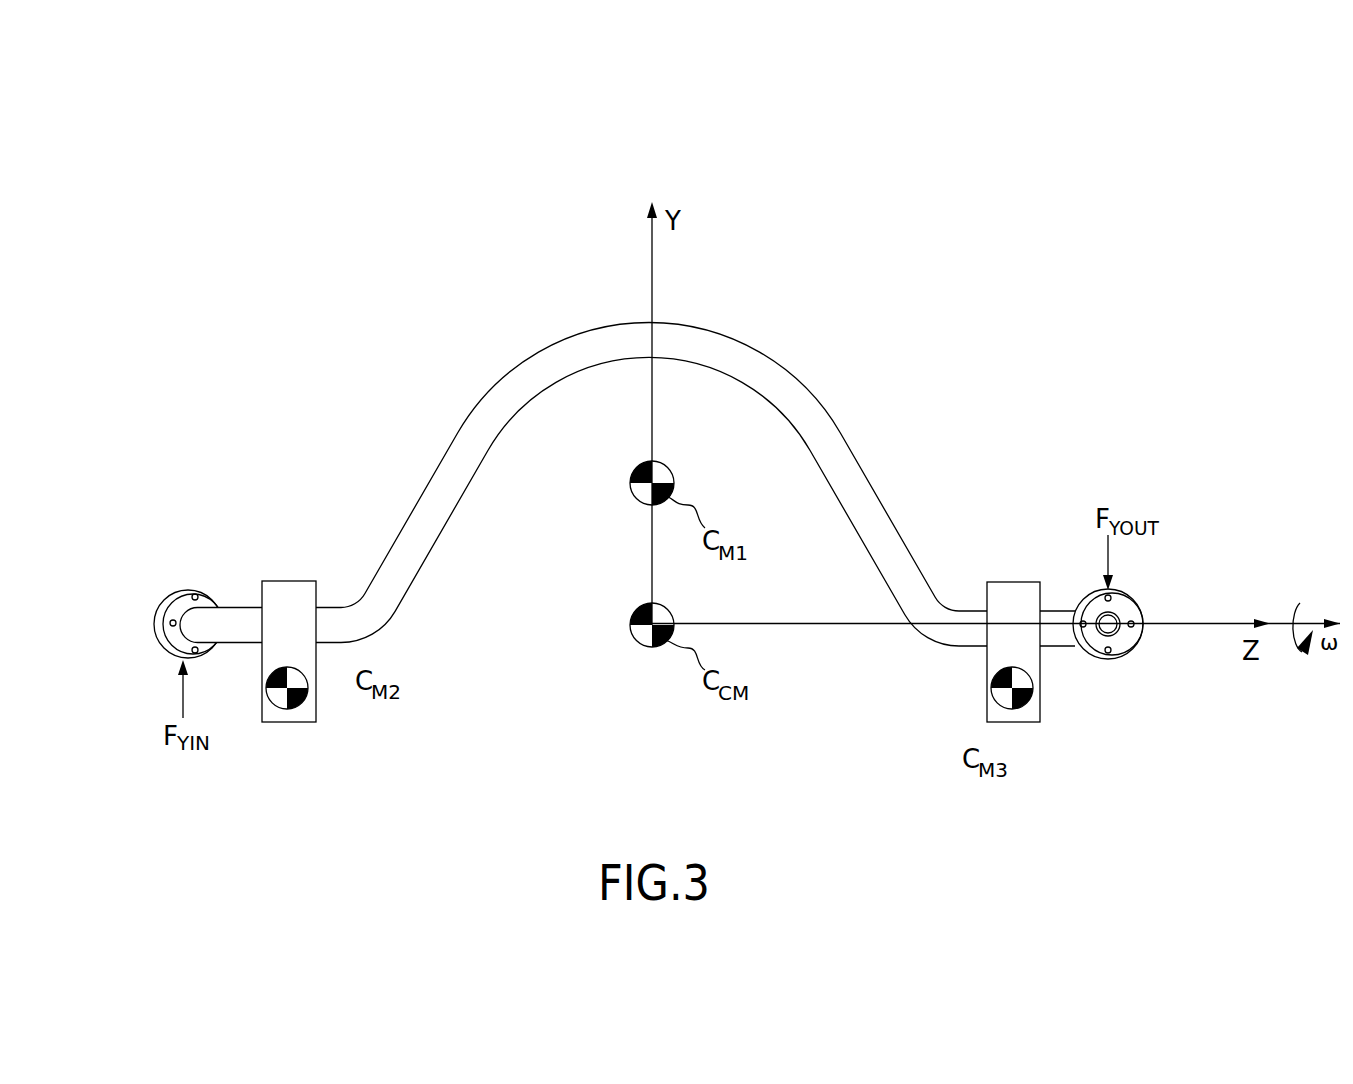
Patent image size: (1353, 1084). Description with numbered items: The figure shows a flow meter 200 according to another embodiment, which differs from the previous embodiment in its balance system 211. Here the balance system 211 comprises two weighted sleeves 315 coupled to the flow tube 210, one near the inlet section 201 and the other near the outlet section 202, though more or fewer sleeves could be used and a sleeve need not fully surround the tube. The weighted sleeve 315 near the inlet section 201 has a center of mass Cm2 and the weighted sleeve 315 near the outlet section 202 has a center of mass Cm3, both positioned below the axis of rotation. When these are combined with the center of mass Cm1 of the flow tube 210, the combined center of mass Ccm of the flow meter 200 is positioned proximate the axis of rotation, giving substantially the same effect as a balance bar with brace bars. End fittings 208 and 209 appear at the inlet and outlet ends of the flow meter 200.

The flow meter 200 is at (627, 505).
The inlet section 201 is at (232, 646).
The outlet section 202 is at (1050, 612).
The input flange 208 is at (165, 635).
The output flange 209 is at (1125, 645).
The flow tube 210 is at (845, 440).
The balance system 211 is at (701, 720).
The weighted sleeve 315 is at (278, 714).